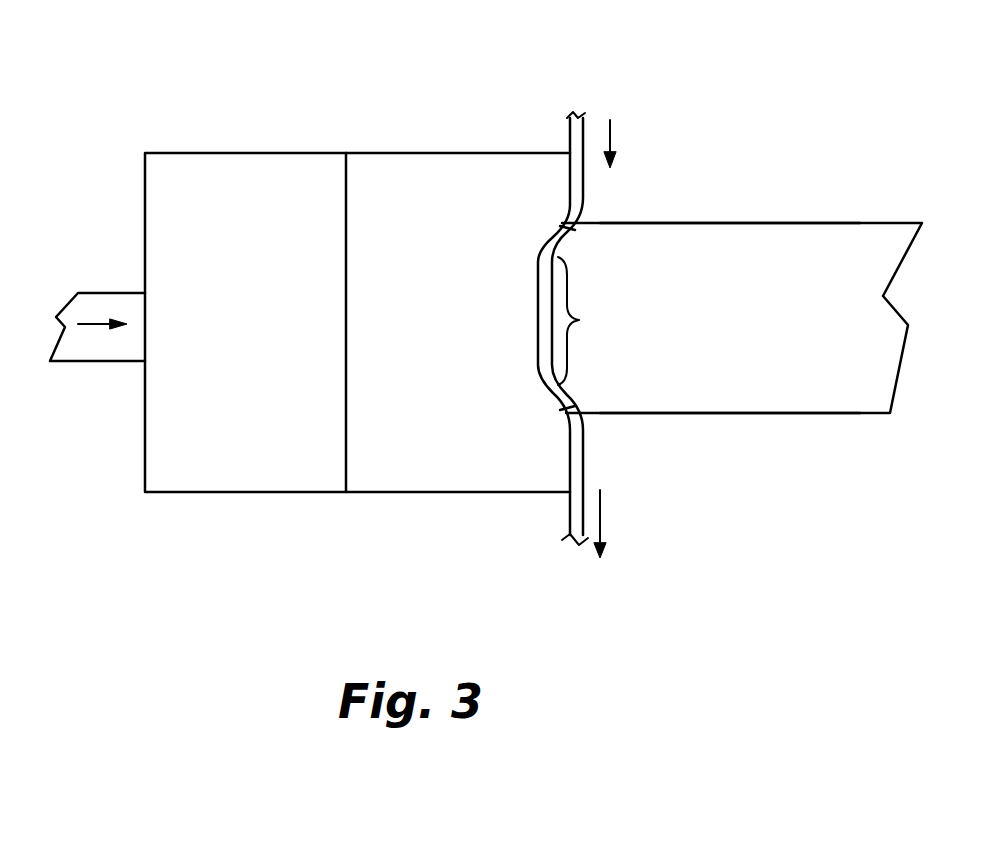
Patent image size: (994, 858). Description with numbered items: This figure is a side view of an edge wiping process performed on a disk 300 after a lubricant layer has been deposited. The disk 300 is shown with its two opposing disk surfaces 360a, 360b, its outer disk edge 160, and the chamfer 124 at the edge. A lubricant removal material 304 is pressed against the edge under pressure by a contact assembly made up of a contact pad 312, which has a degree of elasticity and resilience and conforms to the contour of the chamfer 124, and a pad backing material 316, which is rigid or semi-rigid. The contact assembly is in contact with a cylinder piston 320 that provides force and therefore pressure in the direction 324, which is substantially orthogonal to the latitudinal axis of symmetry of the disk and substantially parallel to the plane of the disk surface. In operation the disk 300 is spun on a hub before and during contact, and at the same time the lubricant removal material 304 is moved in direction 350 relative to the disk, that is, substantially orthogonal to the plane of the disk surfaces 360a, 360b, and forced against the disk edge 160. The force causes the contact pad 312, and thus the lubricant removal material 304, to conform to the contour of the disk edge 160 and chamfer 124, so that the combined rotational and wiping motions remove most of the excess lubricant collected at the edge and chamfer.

The disk 300 is at (821, 223).
The lubricant removal material 304 is at (586, 128).
The contact pad 312 is at (450, 492).
The pad backing material 316 is at (225, 492).
The cylinder piston 320 is at (78, 362).
The direction 324 is at (91, 322).
The direction 350 is at (612, 135).
The disk surface 360a is at (717, 223).
The disk surface 360b is at (813, 414).
The chamfer 124 is at (567, 228).
The disk edge 160 is at (581, 320).